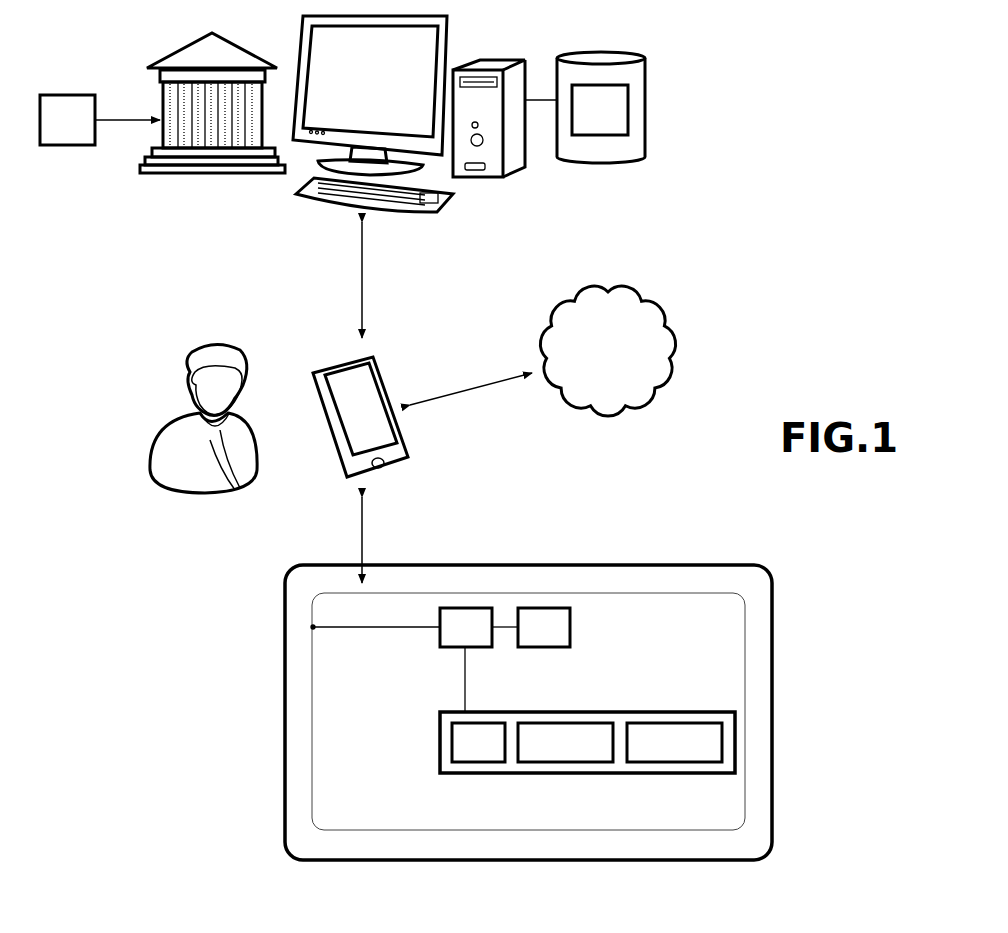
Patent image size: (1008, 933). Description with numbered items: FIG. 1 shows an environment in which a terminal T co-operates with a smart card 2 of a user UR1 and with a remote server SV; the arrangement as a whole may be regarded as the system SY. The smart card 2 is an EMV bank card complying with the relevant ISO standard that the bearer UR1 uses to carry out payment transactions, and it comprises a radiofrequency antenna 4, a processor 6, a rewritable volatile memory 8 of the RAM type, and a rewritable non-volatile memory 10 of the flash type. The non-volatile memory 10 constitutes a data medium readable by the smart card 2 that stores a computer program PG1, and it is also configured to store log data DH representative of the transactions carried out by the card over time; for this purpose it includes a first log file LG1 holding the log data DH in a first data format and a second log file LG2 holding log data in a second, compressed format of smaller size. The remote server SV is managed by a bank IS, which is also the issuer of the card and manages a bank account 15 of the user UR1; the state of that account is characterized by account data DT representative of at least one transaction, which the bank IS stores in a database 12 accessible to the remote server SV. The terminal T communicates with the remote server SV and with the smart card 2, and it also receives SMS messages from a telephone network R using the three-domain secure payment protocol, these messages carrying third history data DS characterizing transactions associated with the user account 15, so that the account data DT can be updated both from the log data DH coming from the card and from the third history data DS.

The bank account 15 is at (80, 132).
The bank IS is at (170, 38).
The remote server SV is at (478, 202).
The database 12 is at (530, 195).
The account data DT is at (373, 258).
The user UR1 is at (165, 411).
The terminal T is at (420, 470).
The telephone network R is at (615, 361).
The third history data DS is at (495, 397).
The log data DH is at (377, 515).
The system SY is at (326, 492).
The smart card 2 is at (783, 716).
The radiofrequency antenna 4 is at (315, 690).
The processor 6 is at (472, 640).
The rewritable volatile memory 8 is at (550, 640).
The rewritable non-volatile memory 10 is at (555, 721).
The computer program PG1 is at (478, 742).
The first log file LG1 is at (557, 722).
The second log file LG2 is at (668, 722).